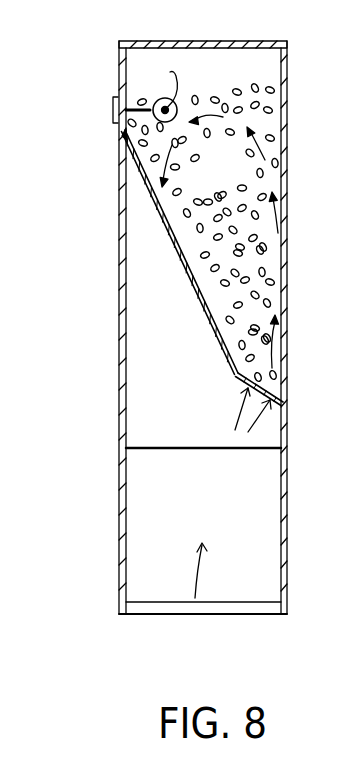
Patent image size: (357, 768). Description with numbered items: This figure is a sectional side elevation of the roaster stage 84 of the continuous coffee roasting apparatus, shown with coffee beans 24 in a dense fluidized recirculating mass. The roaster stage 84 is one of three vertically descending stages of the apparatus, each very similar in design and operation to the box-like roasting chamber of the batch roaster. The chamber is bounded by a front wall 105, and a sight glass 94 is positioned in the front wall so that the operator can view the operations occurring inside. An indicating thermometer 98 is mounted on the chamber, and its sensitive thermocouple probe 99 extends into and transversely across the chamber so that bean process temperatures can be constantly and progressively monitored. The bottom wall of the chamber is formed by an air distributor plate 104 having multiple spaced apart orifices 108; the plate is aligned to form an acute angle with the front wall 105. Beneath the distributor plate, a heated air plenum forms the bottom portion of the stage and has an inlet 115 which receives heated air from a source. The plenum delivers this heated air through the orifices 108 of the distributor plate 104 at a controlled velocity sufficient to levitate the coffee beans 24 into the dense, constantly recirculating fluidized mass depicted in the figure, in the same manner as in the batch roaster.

The coffee beans 24 is at (207, 138).
The roaster stage 84 is at (92, 407).
The sight glass 94 is at (287, 152).
The indicating thermometer 98 is at (113, 97).
The thermocouple probe 99 is at (131, 103).
The air distributor plate 104 is at (240, 384).
The front wall 105 is at (288, 243).
The orifices 108 is at (256, 366).
The inlet 115 is at (219, 616).